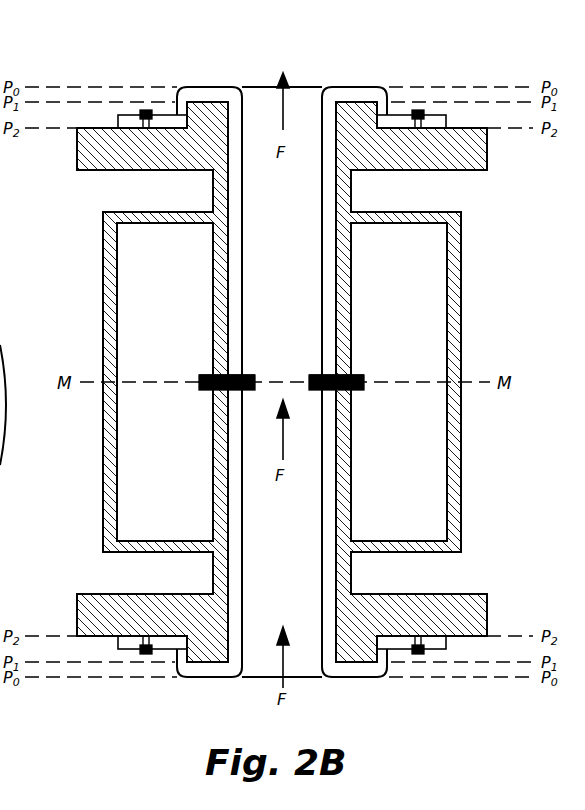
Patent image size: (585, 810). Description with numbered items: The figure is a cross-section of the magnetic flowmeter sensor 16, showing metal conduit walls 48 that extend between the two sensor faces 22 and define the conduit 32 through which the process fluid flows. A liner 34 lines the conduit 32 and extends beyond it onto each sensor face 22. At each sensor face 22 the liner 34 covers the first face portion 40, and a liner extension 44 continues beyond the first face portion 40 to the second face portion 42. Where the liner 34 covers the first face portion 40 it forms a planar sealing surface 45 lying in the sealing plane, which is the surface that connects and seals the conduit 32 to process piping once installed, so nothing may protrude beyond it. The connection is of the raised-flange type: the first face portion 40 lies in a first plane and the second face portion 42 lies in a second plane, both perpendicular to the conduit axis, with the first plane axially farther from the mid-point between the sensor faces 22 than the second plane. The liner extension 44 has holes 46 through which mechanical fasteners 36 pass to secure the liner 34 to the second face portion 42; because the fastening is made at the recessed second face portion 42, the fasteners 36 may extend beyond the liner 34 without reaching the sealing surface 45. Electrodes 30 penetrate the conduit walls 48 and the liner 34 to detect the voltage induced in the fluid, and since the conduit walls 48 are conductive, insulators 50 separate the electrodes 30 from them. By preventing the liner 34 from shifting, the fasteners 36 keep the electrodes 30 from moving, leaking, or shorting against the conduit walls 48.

The magnetic flowmeter sensor 16 is at (462, 233).
The sensor face 22 is at (468, 128).
The electrode 30 is at (200, 388).
The conduit 32 is at (296, 214).
The liner 34 is at (243, 116).
The mechanical fastener 36 is at (143, 110).
The first face portion 40 is at (212, 102).
The second face portion 42 is at (118, 128).
The liner extension 44 is at (167, 115).
The planar sealing surface 45 is at (346, 86).
The hole 46 is at (138, 127).
The conduit wall 48 is at (224, 192).
The insulator 50 is at (208, 373).